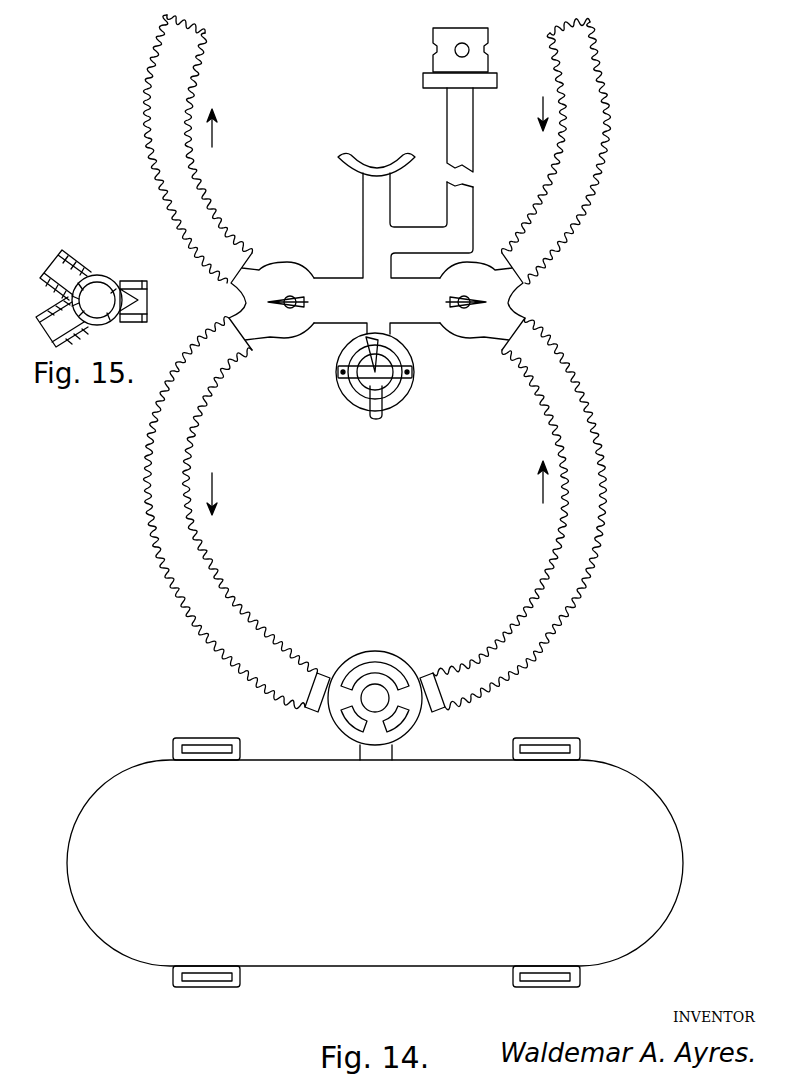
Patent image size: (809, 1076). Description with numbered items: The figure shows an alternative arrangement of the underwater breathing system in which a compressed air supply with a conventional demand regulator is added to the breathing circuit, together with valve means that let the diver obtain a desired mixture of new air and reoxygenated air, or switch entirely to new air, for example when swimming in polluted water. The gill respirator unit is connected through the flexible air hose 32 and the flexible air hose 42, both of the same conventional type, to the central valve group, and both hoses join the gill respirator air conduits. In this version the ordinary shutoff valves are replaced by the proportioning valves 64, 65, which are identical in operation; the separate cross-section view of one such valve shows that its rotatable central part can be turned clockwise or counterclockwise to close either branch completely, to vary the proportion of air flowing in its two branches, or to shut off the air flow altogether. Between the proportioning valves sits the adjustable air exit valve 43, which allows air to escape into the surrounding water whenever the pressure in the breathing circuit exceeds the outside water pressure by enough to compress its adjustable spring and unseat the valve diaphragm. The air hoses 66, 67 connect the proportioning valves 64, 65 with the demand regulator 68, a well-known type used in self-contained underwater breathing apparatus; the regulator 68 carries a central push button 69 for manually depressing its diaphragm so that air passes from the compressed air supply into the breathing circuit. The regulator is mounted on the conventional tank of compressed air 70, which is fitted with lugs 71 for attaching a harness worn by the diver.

In FIG. 14, the flexible air hose 32 is at (588, 113).
In FIG. 14, the flexible air hose 42 is at (168, 103).
In FIG. 14, the adjustable air exit valve 43 is at (398, 397).
In FIG. 14, the proportioning valve 64 is at (486, 312).
In FIG. 15, the proportioning valve 65 is at (103, 274).
In FIG. 14, the proportioning valve 65 is at (284, 320).
In FIG. 14, the air hose 66 is at (592, 494).
In FIG. 14, the air hose 67 is at (173, 525).
In FIG. 14, the demand regulator 68 is at (377, 658).
In FIG. 14, the valve disc 69 is at (382, 703).
In FIG. 14, the tank of compressed air 70 is at (668, 860).
In FIG. 14, the lugs 71 is at (221, 735).